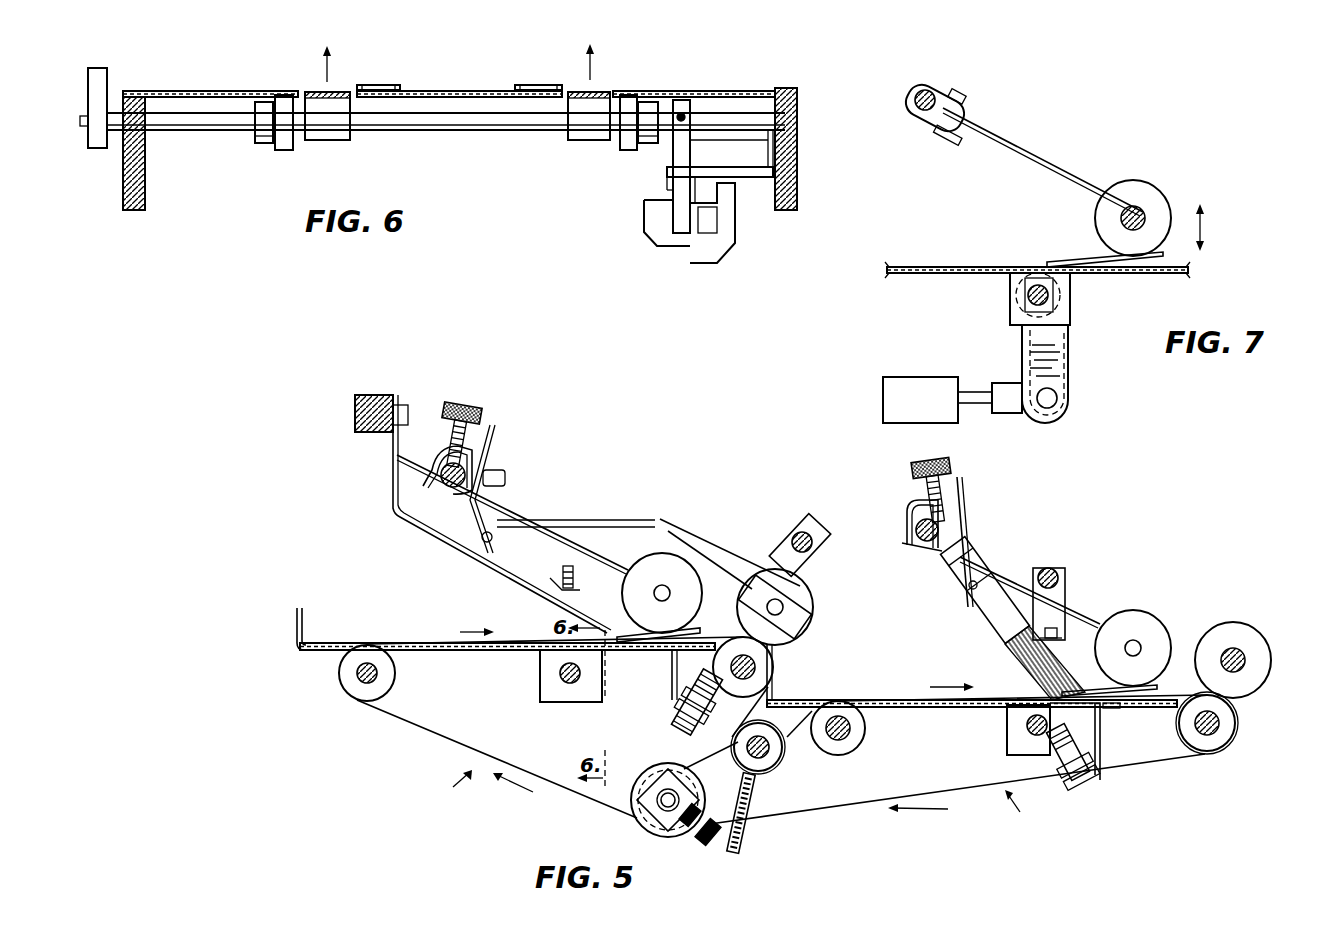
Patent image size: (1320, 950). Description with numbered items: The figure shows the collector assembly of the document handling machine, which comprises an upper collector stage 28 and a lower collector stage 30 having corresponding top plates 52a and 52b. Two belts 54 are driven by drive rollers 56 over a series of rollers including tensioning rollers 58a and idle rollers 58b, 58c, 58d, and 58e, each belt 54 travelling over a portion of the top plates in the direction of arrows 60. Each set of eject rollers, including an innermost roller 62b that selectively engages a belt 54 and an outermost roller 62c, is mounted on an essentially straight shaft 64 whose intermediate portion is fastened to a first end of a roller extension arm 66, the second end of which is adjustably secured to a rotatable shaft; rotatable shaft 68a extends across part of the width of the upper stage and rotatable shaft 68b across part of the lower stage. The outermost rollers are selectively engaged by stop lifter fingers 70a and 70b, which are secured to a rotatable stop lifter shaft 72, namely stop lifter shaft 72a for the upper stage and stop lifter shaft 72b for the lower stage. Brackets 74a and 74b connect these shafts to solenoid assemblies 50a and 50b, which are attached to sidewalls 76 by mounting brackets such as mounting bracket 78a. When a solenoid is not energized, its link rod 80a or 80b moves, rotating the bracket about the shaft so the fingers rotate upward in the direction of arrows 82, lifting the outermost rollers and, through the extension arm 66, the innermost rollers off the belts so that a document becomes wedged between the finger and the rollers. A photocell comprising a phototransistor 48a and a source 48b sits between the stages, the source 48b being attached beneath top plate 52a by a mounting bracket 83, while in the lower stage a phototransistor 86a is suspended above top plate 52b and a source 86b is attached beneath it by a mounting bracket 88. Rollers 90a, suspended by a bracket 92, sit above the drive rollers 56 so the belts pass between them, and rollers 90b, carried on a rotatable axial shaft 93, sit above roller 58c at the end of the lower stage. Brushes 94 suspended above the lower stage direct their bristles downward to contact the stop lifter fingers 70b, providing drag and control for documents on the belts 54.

In FIG. 5, the upper collector stage 28 is at (453, 788).
In FIG. 5, the lower collector stage 30 is at (1020, 812).
In FIG. 5, the phototransistor 48a is at (812, 574).
In FIG. 5, the source 48b is at (683, 726).
In FIG. 6, the solenoid assembly 50a is at (650, 237).
In FIG. 7, the solenoid assembly 50b is at (912, 377).
In FIG. 6, the top plate 52a is at (213, 90).
In FIG. 5, the top plate 52a is at (466, 651).
In FIG. 7, the top plate 52b is at (940, 273).
In FIG. 5, the top plate 52b is at (936, 708).
In FIG. 6, the belt 54 is at (405, 85).
In FIG. 5, the belt 54 is at (400, 643).
In FIG. 5, the drive roller 56 is at (774, 660).
In FIG. 5, the tensioning roller 58a is at (776, 766).
In FIG. 5, the idle roller 58b is at (860, 740).
In FIG. 5, the idle roller 58c is at (1226, 745).
In FIG. 5, the idle roller 58d is at (660, 763).
In FIG. 5, the idle roller 58e is at (391, 684).
In FIG. 5, the arrows 60 is at (462, 631).
In FIG. 7, the eject roller 62b is at (1124, 184).
In FIG. 5, the eject roller 62c is at (658, 553).
In FIG. 7, the shaft 64 is at (1148, 210).
In FIG. 5, the shaft 64 is at (667, 587).
In FIG. 7, the roller extension arm 66 is at (1025, 145).
In FIG. 5, the roller extension arm 66 is at (572, 527).
In FIG. 5, the rotatable shaft 68a is at (445, 468).
In FIG. 7, the rotatable shaft 68b is at (918, 86).
In FIG. 5, the rotatable shaft 68b is at (906, 532).
In FIG. 6, the stop lifter finger 70a is at (318, 91).
In FIG. 5, the stop lifter finger 70a is at (695, 636).
In FIG. 7, the stop lifter finger 70b is at (1095, 258).
In FIG. 5, the stop lifter finger 70b is at (1157, 686).
In FIG. 6, the stop lifter shaft 72 is at (198, 134).
In FIG. 6, the stop lifter shaft 72a is at (470, 133).
In FIG. 5, the stop lifter shaft 72a is at (563, 677).
In FIG. 7, the stop lifter shaft 72b is at (1050, 295).
In FIG. 5, the stop lifter shaft 72b is at (1028, 728).
In FIG. 6, the bracket 74a is at (675, 155).
In FIG. 7, the bracket 74b is at (1068, 343).
In FIG. 6, the sidewall 76 is at (141, 196).
In FIG. 6, the mounting bracket 78a is at (758, 180).
In FIG. 6, the link rod 80a is at (700, 238).
In FIG. 7, the link rod 80b is at (1005, 383).
In FIG. 6, the arrows 82 is at (330, 64).
In FIG. 7, the arrows 82 is at (1206, 220).
In FIG. 5, the mounting bracket 83 is at (670, 686).
In FIG. 5, the phototransistor 86a is at (1032, 660).
In FIG. 5, the source 86b is at (1090, 750).
In FIG. 5, the mounting bracket 88 is at (1102, 718).
In FIG. 5, the roller 90a is at (812, 601).
In FIG. 5, the roller 90b is at (1259, 636).
In FIG. 5, the bracket 92 is at (600, 520).
In FIG. 5, the rotatable axial shaft 93 is at (1234, 650).
In FIG. 5, the brush 94 is at (990, 622).